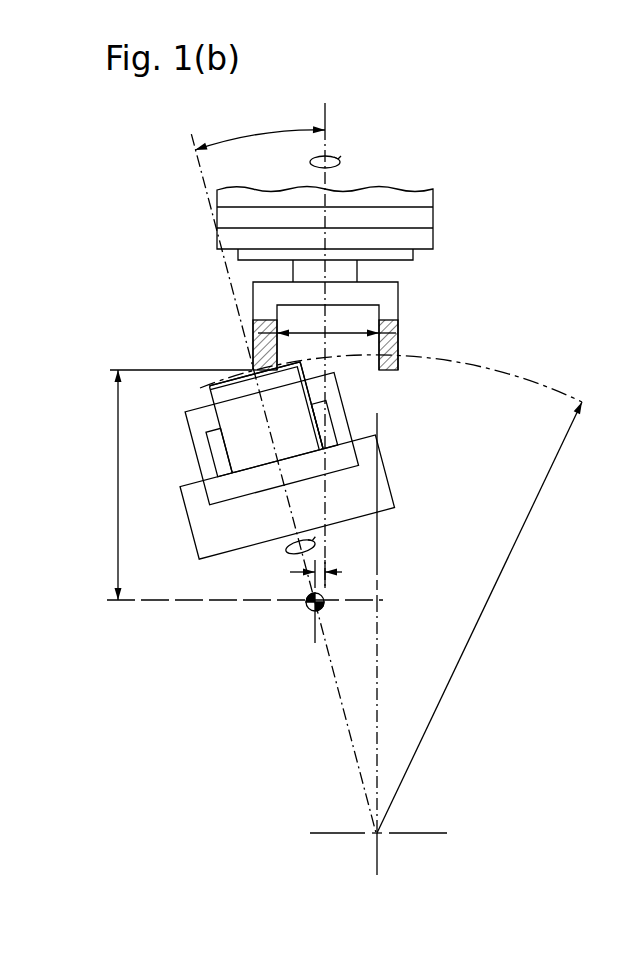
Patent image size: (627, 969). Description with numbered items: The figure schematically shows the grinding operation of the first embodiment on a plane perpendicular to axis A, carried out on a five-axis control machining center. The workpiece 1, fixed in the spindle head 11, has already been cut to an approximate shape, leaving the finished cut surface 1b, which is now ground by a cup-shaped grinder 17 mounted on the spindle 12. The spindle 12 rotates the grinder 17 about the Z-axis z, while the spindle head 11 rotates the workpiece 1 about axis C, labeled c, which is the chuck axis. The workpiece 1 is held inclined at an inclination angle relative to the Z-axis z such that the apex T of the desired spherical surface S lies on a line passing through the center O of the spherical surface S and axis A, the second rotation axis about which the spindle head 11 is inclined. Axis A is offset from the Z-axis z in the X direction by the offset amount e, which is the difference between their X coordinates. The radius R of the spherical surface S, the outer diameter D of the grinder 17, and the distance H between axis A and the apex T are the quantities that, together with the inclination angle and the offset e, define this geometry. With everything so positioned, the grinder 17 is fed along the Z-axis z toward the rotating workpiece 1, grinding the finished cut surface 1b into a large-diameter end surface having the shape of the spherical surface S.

The workpiece 1 is at (235, 435).
The finished cut surface 1b is at (250, 364).
The spindle head 11 is at (202, 540).
The spindle 12 is at (422, 241).
The grinder 17 is at (388, 298).
The apex of the spherical surface T is at (252, 366).
The spherical surface S is at (200, 388).
The distance between axis A and the apex T H is at (240, 485).
The outer diameter of the grinder D is at (330, 334).
The axis C c is at (292, 550).
The offset amount e is at (326, 569).
The axis A is at (307, 608).
The center of the spherical surface O is at (380, 831).
The radius of the spherical surface R is at (527, 578).
The Z-axis z is at (326, 345).